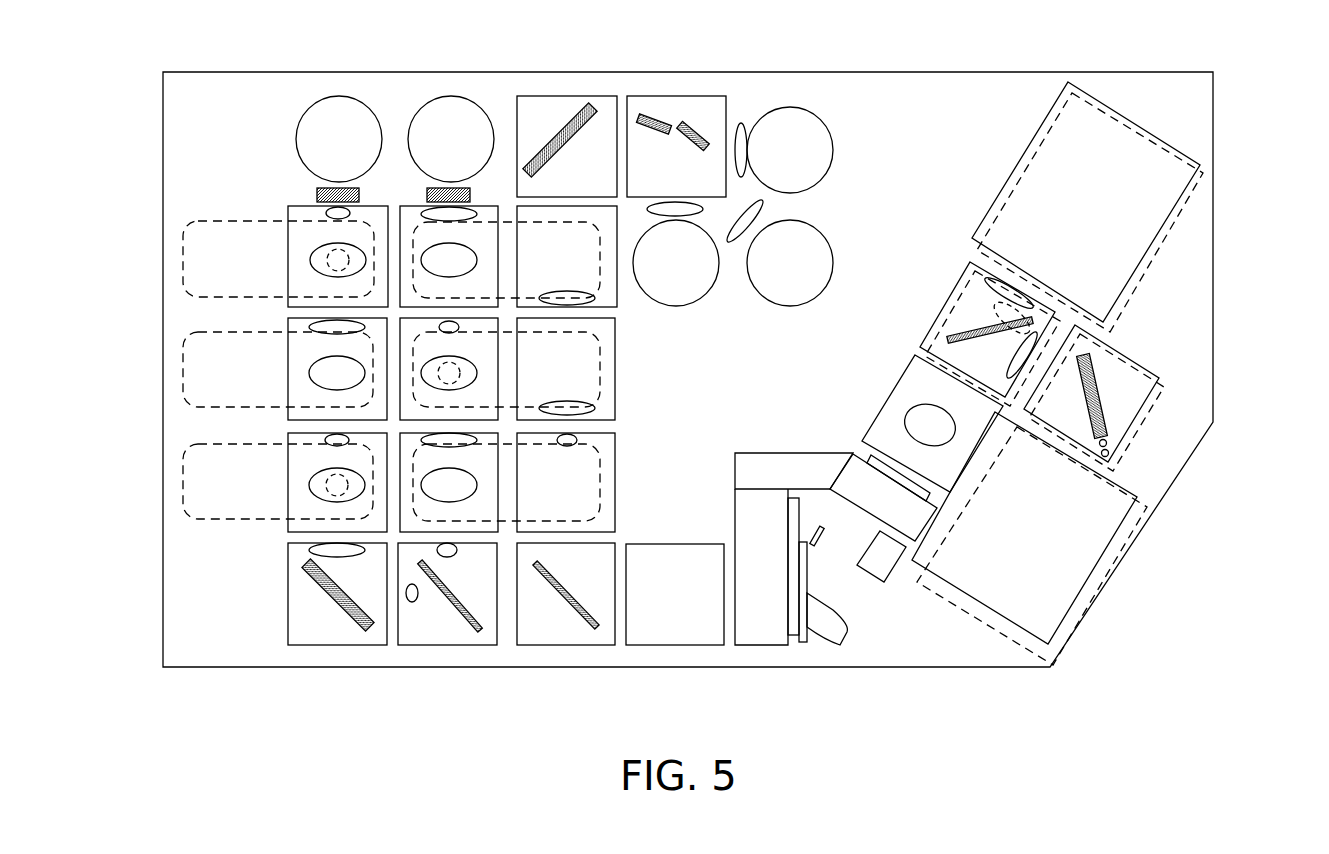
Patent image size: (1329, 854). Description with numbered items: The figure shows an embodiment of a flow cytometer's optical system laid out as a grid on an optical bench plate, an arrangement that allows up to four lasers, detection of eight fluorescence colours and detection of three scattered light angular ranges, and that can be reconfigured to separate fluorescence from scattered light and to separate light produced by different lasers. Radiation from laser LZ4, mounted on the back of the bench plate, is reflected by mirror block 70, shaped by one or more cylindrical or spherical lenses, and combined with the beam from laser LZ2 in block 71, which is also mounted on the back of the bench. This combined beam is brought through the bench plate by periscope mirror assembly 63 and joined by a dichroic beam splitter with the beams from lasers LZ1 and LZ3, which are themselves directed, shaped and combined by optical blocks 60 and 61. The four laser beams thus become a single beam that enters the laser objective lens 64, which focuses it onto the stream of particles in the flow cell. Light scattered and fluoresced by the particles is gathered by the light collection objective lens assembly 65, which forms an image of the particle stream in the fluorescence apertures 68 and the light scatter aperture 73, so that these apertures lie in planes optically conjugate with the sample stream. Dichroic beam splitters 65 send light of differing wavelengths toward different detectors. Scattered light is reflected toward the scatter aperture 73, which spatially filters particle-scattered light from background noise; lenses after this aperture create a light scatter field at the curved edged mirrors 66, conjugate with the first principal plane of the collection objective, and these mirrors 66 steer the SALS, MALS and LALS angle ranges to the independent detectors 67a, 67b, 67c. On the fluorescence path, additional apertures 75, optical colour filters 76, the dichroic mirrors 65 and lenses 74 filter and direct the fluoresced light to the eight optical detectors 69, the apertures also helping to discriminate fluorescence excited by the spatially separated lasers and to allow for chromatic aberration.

The optical block 60 is at (1150, 368).
The optical block 61 is at (957, 270).
The periscope mirror assembly 63 is at (907, 397).
The laser objective lens 64 is at (833, 622).
The light collection objective lens assembly / dichroic beam splitters 65 is at (572, 607).
The curved edged mirrors 66 is at (670, 120).
The detector 67a is at (676, 263).
The detector 67b is at (790, 263).
The detector 67c is at (790, 150).
The fluorescence apertures 68 is at (453, 565).
The optical detectors 69 is at (190, 397).
The mirror block 70 is at (1132, 453).
The block 71 is at (943, 308).
The light scatter aperture 73 is at (582, 440).
The lenses 74 is at (305, 552).
The additional apertures 75 is at (323, 219).
The optical colour filters 76 is at (315, 194).
The laser LZ1 is at (1043, 108).
The laser LZ2 is at (1198, 200).
The laser LZ3 is at (1075, 605).
The laser LZ4 is at (980, 628).